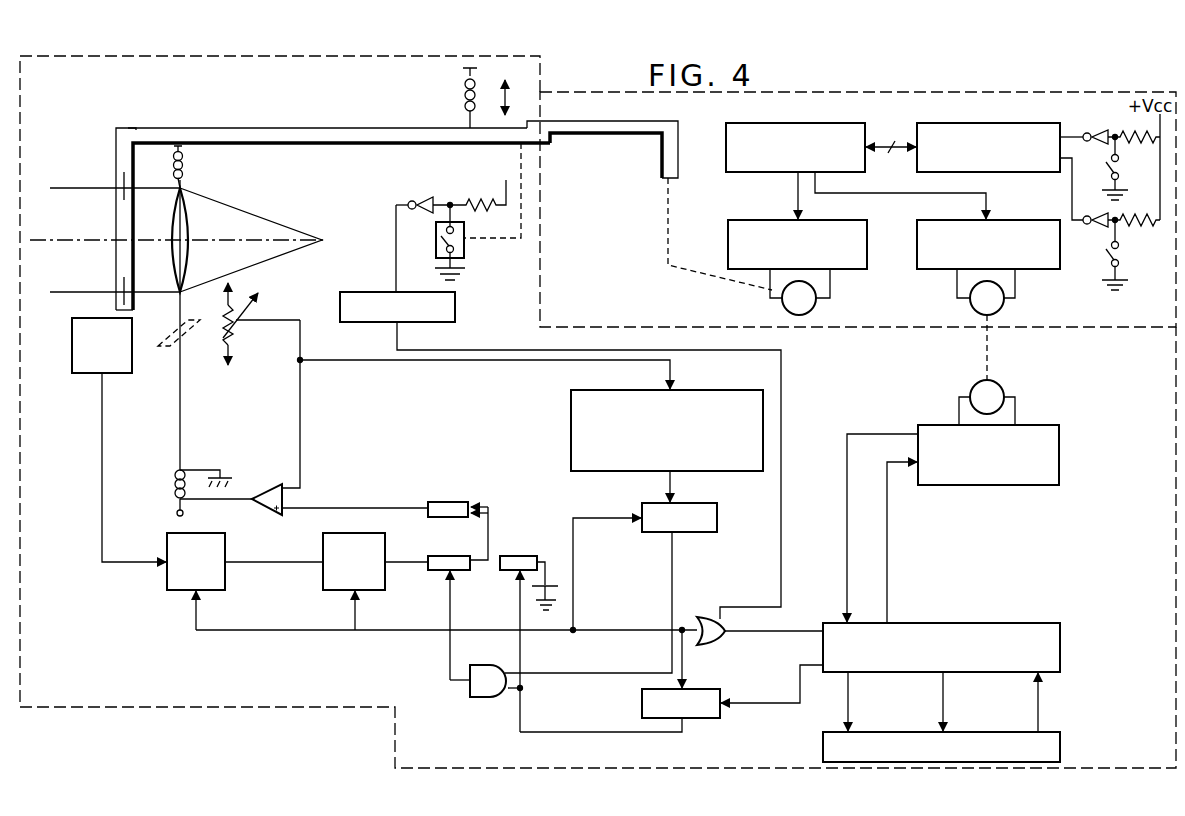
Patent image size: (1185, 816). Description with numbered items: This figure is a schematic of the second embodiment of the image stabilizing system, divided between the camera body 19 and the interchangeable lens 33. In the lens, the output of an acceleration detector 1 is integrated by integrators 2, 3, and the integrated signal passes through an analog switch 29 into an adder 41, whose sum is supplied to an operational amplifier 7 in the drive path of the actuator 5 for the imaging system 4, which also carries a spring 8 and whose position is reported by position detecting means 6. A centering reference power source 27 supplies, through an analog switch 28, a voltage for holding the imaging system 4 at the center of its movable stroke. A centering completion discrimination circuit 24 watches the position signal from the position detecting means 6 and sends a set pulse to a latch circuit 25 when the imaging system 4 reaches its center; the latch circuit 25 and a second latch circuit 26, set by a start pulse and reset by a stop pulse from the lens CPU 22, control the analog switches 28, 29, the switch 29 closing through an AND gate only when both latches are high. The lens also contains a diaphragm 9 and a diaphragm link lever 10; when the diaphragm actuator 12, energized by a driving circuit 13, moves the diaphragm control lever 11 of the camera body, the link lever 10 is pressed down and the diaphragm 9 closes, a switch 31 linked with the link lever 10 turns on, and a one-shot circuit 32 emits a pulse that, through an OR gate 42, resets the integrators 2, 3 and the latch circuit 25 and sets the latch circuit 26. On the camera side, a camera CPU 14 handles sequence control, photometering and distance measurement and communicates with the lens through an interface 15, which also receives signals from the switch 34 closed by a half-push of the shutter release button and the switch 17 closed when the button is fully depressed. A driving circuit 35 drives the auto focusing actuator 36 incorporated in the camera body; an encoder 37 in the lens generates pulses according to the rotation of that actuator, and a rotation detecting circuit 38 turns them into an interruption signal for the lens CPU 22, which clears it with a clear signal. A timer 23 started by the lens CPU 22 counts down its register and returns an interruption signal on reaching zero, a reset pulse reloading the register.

The acceleration detector 1 is at (72, 343).
The integrator 2 is at (167, 582).
The integrator 3 is at (323, 578).
The imaging system 4 is at (171, 222).
The actuator 5 is at (176, 486).
The position detecting means 6 is at (236, 328).
The operational amplifier 7 is at (272, 484).
The spring 8 is at (184, 160).
The diaphragm 9 is at (122, 186).
The diaphragm link lever 10 is at (130, 128).
The diaphragm control lever 11 is at (655, 122).
The diaphragm actuator 12 is at (816, 302).
The driving circuit 13 is at (775, 220).
The camera CPU 14 is at (820, 123).
The interface 15 is at (972, 123).
The S2 switch 17 is at (1120, 256).
The camera body 19 is at (1035, 92).
The lens CPU 22 is at (1060, 640).
The timer 23 is at (1060, 757).
The centering completion discrimination circuit 24 is at (745, 471).
The latch circuit 25 is at (717, 518).
The latch circuit 26 is at (700, 718).
The centering reference power source 27 is at (550, 585).
The analog switch 28 is at (514, 556).
The analog switch 29 is at (434, 556).
The switch 31 is at (464, 250).
The one-shot circuit 32 is at (455, 306).
The interchangeable lens 33 is at (240, 707).
The S1 switch 34 is at (1120, 162).
The driving circuit 35 is at (990, 220).
The auto focusing actuator 36 is at (1004, 302).
The encoder 37 is at (1004, 390).
The rotation detecting circuit 38 is at (1059, 440).
The adder 41 is at (436, 502).
The OR gate 42 is at (700, 618).